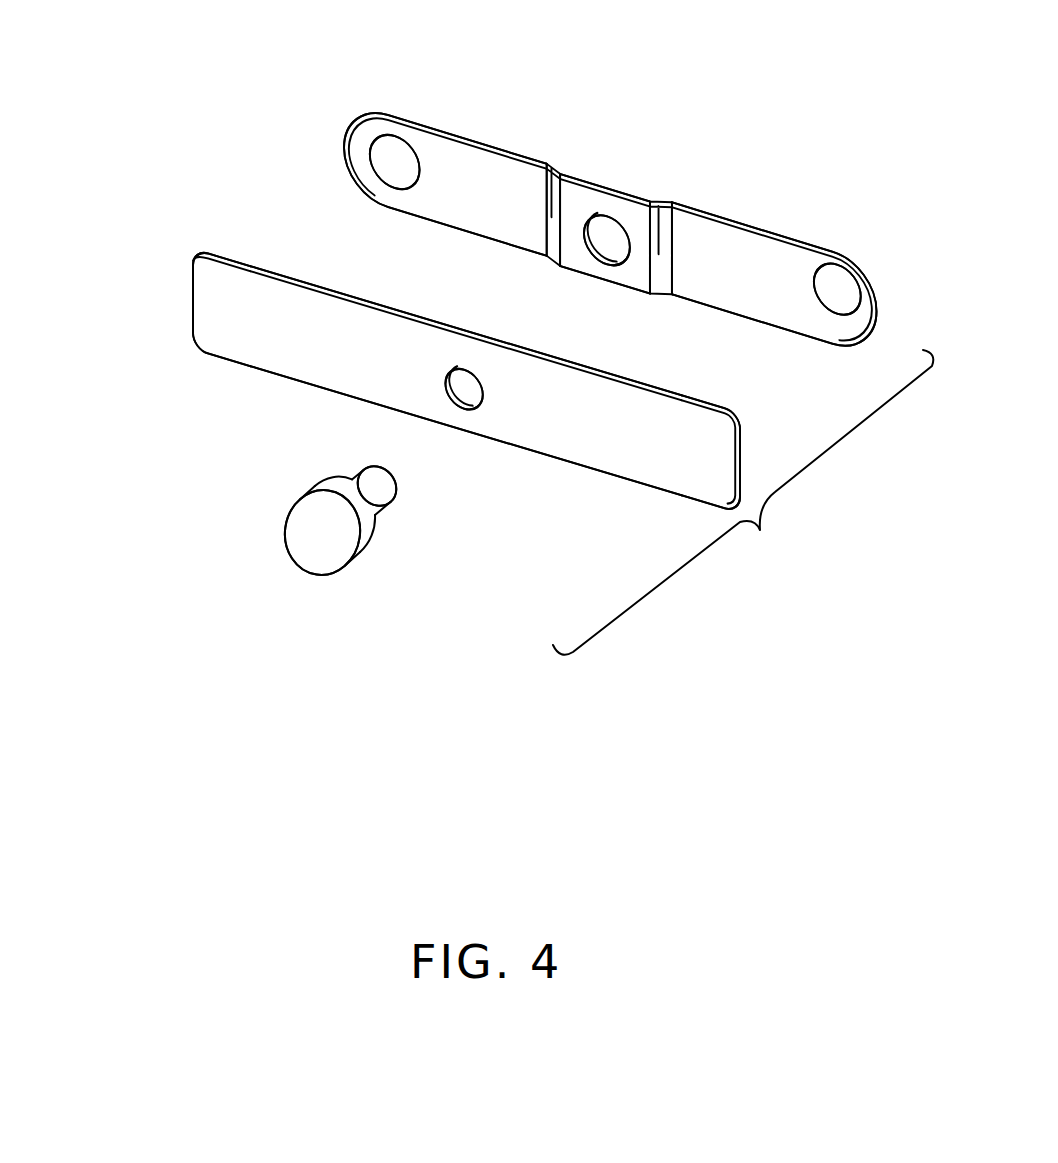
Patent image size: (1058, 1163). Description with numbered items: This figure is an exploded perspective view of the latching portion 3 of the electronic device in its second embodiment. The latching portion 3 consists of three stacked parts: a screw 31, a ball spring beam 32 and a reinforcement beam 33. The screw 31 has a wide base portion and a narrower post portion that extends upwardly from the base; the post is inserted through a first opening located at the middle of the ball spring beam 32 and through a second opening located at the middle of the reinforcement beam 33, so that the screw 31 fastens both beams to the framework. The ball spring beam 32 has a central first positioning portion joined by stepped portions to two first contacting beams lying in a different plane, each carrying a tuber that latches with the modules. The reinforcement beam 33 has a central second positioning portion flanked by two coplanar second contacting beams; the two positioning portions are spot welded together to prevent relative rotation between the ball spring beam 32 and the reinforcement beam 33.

The latching portion 3 is at (501, 339).
The screw 31 is at (278, 509).
The ball spring beam 32 is at (550, 232).
The reinforcement beam 33 is at (405, 360).